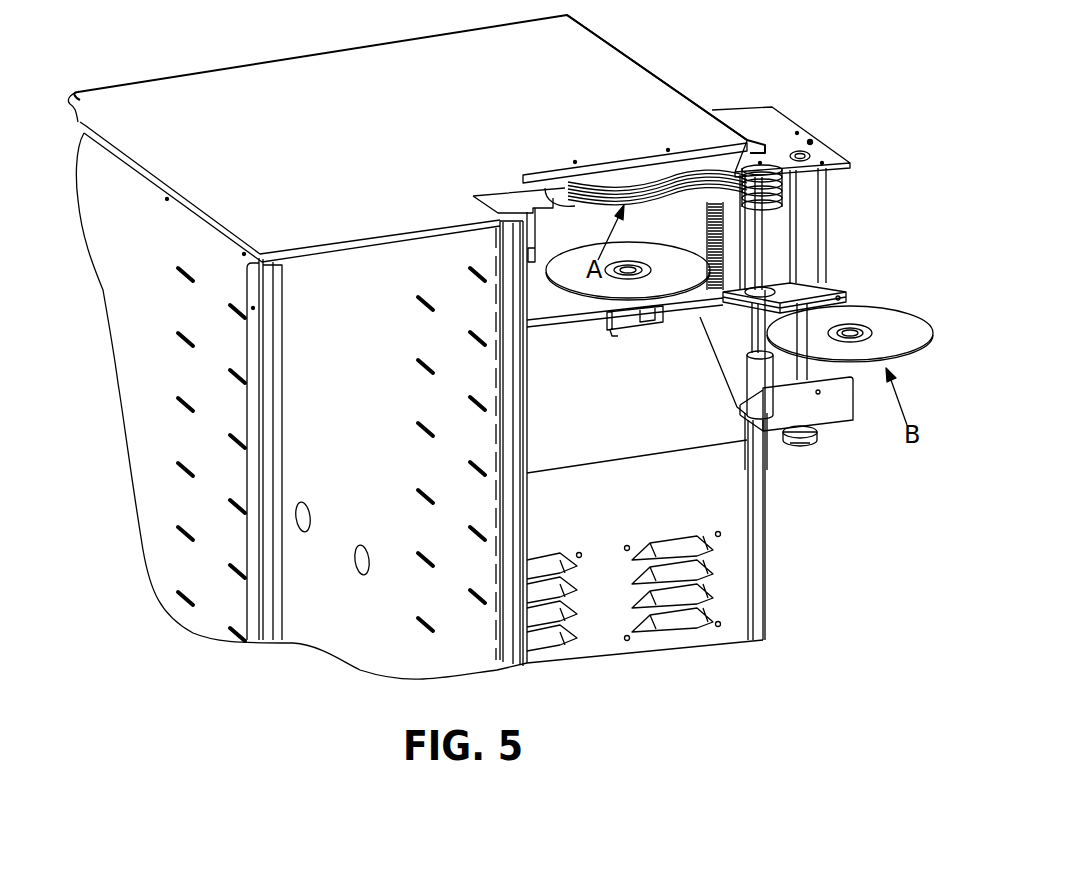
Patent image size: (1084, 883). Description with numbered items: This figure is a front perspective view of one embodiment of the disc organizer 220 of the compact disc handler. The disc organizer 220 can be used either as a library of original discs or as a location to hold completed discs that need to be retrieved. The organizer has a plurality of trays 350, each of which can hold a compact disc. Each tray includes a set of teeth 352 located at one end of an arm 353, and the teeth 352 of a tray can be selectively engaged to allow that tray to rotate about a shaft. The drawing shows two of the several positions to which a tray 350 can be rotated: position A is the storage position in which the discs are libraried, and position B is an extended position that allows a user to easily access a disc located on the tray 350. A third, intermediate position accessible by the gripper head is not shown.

The disc organizer 220 is at (782, 254).
The trays 350 is at (558, 203).
The set of teeth 352 is at (780, 208).
The arm 353 is at (714, 292).